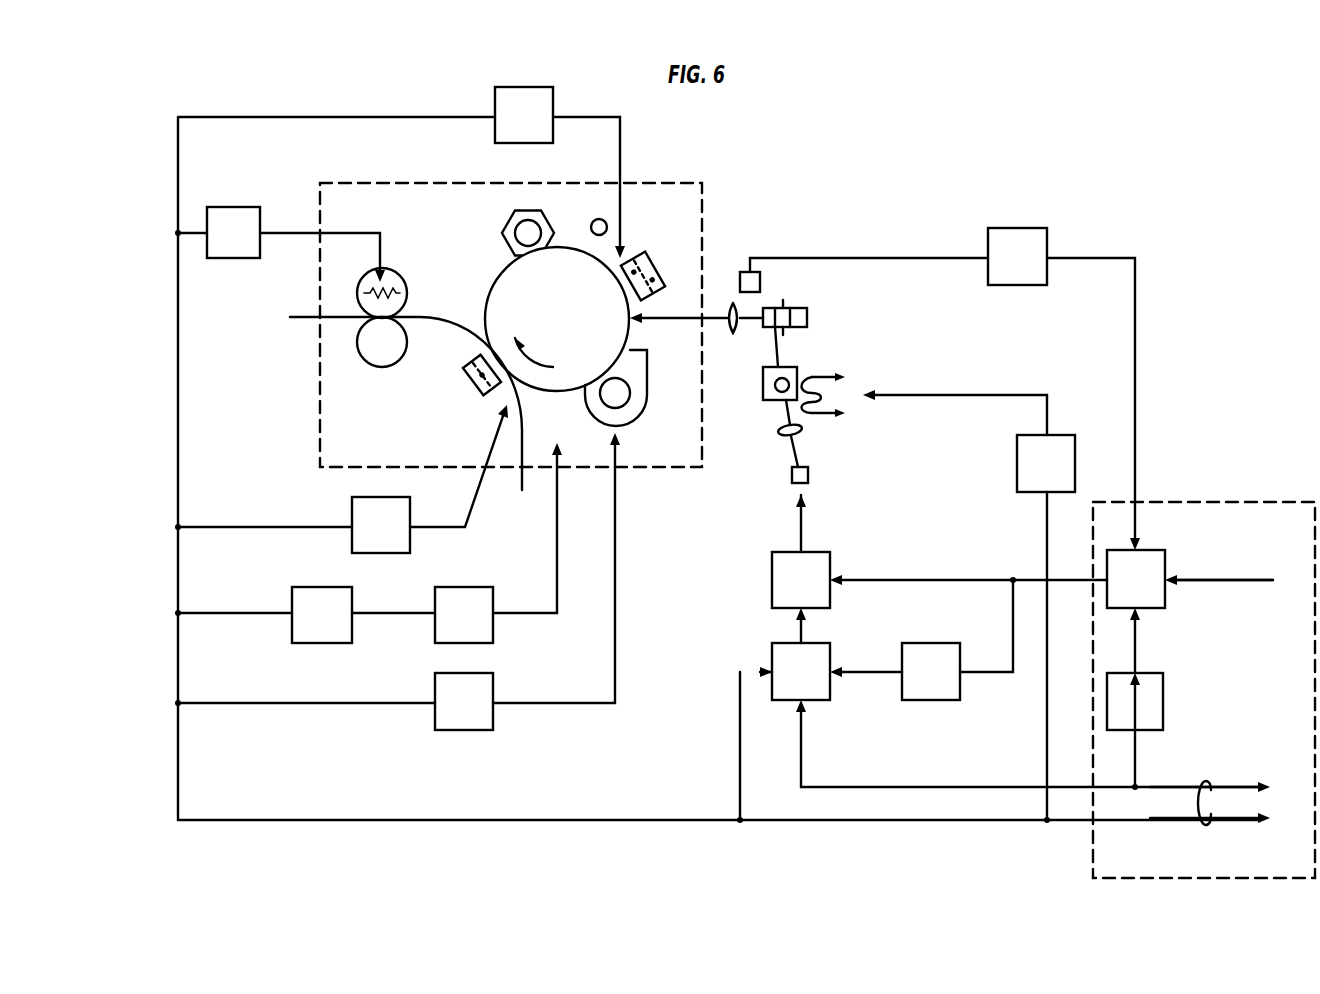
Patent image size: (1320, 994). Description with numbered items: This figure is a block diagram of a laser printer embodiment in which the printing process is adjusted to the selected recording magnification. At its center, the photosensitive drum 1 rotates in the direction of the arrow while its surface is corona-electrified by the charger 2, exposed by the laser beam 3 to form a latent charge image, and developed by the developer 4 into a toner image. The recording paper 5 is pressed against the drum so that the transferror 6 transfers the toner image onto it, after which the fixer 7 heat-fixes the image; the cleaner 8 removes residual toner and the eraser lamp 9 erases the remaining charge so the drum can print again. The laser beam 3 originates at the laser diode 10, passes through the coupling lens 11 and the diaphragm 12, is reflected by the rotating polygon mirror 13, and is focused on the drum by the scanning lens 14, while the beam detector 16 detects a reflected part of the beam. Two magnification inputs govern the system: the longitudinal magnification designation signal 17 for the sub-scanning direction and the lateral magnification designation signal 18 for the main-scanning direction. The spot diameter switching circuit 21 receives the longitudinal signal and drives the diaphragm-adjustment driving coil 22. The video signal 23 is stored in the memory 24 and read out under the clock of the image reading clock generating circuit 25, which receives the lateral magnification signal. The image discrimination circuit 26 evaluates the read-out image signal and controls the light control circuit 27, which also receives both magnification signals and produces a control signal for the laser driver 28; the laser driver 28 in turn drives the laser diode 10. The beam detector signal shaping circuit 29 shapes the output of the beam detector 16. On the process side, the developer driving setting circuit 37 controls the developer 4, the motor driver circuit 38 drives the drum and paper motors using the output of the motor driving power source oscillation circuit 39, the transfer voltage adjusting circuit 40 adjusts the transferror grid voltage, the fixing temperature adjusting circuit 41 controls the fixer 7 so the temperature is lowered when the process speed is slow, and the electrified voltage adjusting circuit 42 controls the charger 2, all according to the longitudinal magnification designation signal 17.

The photosensitive drum 1 is at (490, 278).
The charger 2 is at (655, 255).
The laser beam 3 is at (672, 318).
The developer 4 is at (655, 390).
The recording paper 5 is at (425, 318).
The transferror 6 is at (465, 380).
The fixer 7 is at (405, 278).
The cleaner 8 is at (508, 218).
The eraser lamp 9 is at (600, 219).
The laser diode 10 is at (810, 475).
The coupling lens 11 is at (803, 432).
The diaphragm 12 is at (800, 370).
The polygon mirror 13 is at (807, 318).
The scanning lens 14 is at (730, 335).
The beam detector 16 is at (740, 282).
The longitudinal magnification designation signal 17 is at (1262, 830).
The lateral magnification designation signal 18 is at (1267, 775).
The spot diameter switching circuit 21 is at (1017, 452).
The diaphragm-adjustment driving coil 22 is at (852, 382).
The video signal 23 is at (1250, 580).
The memory 24 is at (1152, 550).
The image reading clock generating circuit 25 is at (1163, 690).
The image discrimination circuit 26 is at (950, 700).
The light control circuit 27 is at (818, 700).
The laser driver 28 is at (772, 575).
The beam detector signal shaping circuit 29 is at (1020, 228).
The developer driving setting circuit 37 is at (478, 730).
The motor driver circuit 38 is at (465, 587).
The motor driving power source oscillation circuit 39 is at (325, 587).
The transfer voltage adjusting circuit 40 is at (385, 497).
The fixing temperature adjusting circuit 41 is at (230, 207).
The electrified voltage adjusting circuit 42 is at (525, 87).